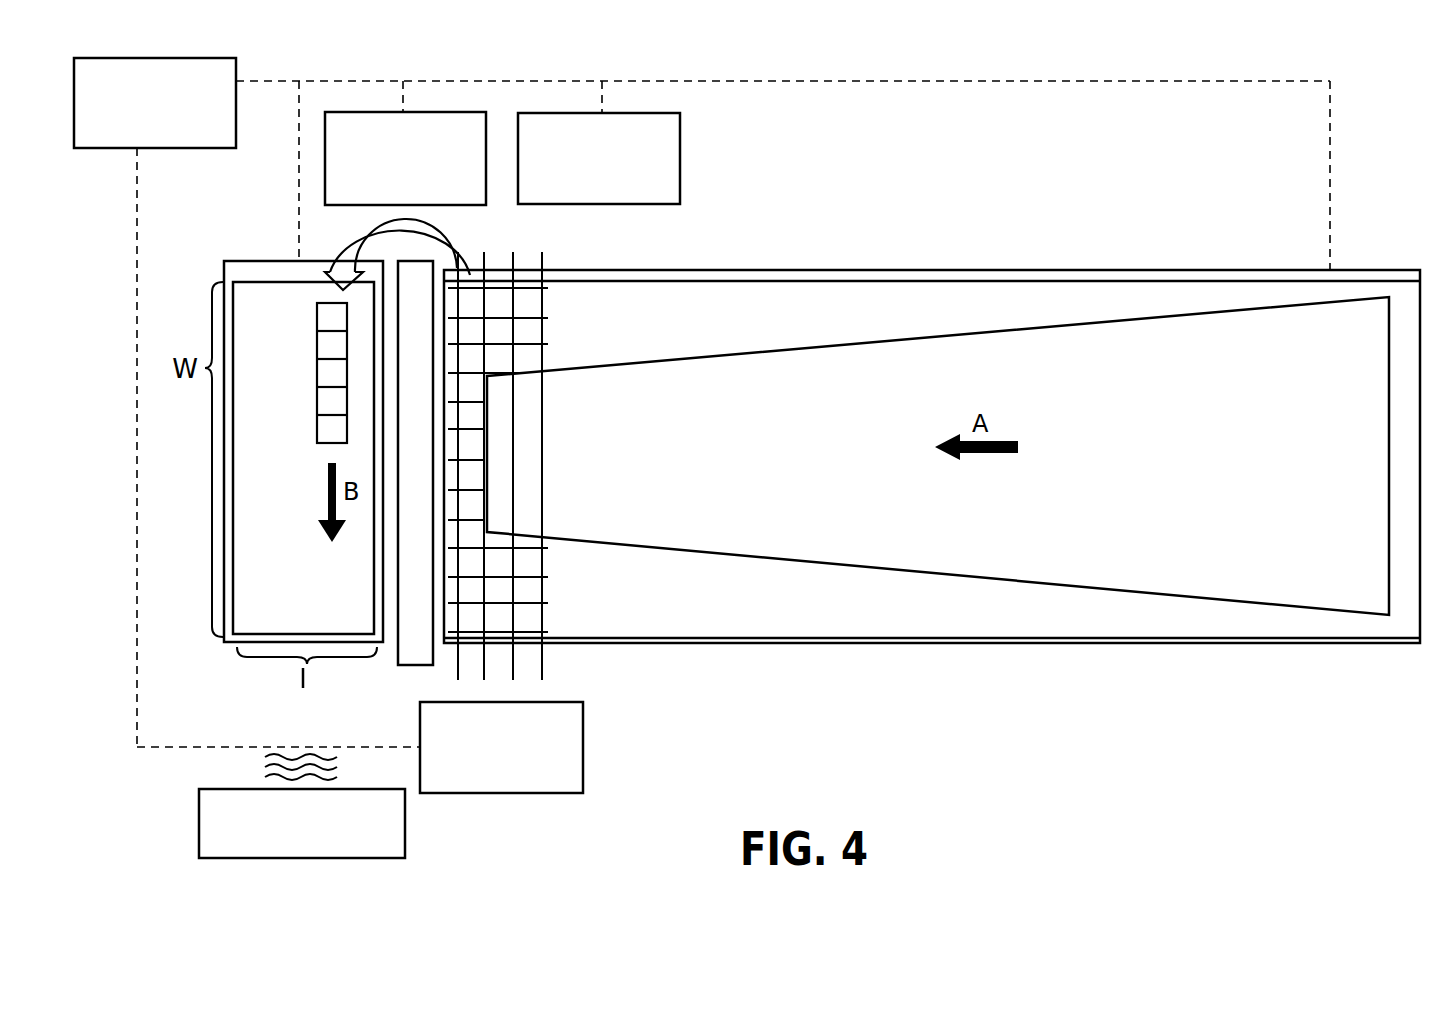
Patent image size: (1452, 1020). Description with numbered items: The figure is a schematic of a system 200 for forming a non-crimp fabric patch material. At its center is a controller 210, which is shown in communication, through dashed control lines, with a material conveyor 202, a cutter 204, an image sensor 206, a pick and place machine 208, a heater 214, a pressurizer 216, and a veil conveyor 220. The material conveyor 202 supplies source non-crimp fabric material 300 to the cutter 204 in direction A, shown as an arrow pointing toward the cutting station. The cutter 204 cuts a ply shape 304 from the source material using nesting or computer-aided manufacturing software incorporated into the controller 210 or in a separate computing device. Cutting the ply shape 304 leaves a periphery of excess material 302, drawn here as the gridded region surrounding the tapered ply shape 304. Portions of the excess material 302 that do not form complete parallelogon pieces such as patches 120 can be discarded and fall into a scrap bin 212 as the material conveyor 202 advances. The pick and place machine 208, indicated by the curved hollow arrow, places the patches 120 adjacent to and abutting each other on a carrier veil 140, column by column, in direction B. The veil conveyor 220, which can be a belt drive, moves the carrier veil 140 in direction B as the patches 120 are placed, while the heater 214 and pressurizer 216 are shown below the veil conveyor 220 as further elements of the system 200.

The system 200 is at (1382, 64).
The material conveyor 202 is at (1097, 260).
The cutter 204 is at (480, 772).
The image sensor 206 is at (578, 186).
The pick and place machine 208 is at (384, 198).
The controller 210 is at (133, 129).
The scrap bin 212 is at (403, 667).
The heater 214 is at (332, 821).
The pressurizer 216 is at (377, 849).
The veil conveyor 220 is at (290, 262).
The carrier veil 140 is at (253, 280).
The patches 120 is at (317, 352).
The source non-crimp fabric material 300 is at (1260, 281).
The excess material 302 is at (890, 313).
The ply shape 304 is at (1247, 466).